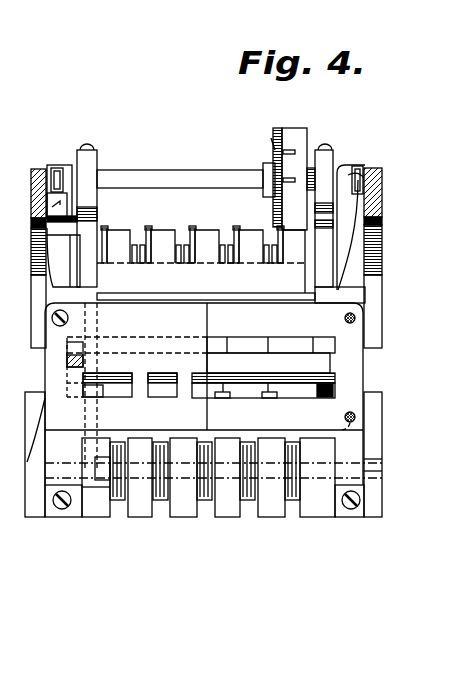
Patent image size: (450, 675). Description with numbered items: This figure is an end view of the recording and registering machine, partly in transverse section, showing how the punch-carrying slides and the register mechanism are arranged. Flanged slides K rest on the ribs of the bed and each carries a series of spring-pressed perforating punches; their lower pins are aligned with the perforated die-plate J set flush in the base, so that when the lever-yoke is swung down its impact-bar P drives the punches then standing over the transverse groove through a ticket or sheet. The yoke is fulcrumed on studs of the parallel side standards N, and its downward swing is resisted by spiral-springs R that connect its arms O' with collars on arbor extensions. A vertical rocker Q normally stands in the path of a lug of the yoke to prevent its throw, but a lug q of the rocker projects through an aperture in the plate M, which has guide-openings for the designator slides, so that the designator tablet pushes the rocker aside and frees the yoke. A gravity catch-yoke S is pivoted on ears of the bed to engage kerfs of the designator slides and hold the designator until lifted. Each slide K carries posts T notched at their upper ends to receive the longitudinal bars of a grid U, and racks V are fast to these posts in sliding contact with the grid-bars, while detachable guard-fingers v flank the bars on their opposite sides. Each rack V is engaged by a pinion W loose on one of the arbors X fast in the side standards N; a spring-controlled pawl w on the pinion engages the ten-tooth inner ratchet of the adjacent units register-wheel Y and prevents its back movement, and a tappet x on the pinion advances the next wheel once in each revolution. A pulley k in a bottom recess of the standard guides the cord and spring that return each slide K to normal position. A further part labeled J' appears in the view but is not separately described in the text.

The impact-bar P is at (32, 200).
The arms of the lever-yoke O' is at (204, 250).
The spiral-springs R is at (50, 166).
The side standards N is at (93, 163).
The arbors X is at (185, 176).
The vertical rocker Q is at (90, 257).
The pinion W is at (278, 128).
The units register-wheel Y is at (302, 131).
The tappet x is at (272, 143).
The racks V is at (147, 228).
The guard-fingers v is at (134, 245).
The grid U is at (121, 246).
The plate M is at (49, 337).
The gravity catch-yoke S is at (88, 353).
The lug of the rocker q is at (100, 392).
The posts T is at (285, 332).
The pawl w is at (268, 363).
The flanged slides K is at (247, 390).
The perforated die-plate J is at (182, 494).
The end key blade J' is at (301, 476).
The pulley k is at (125, 478).